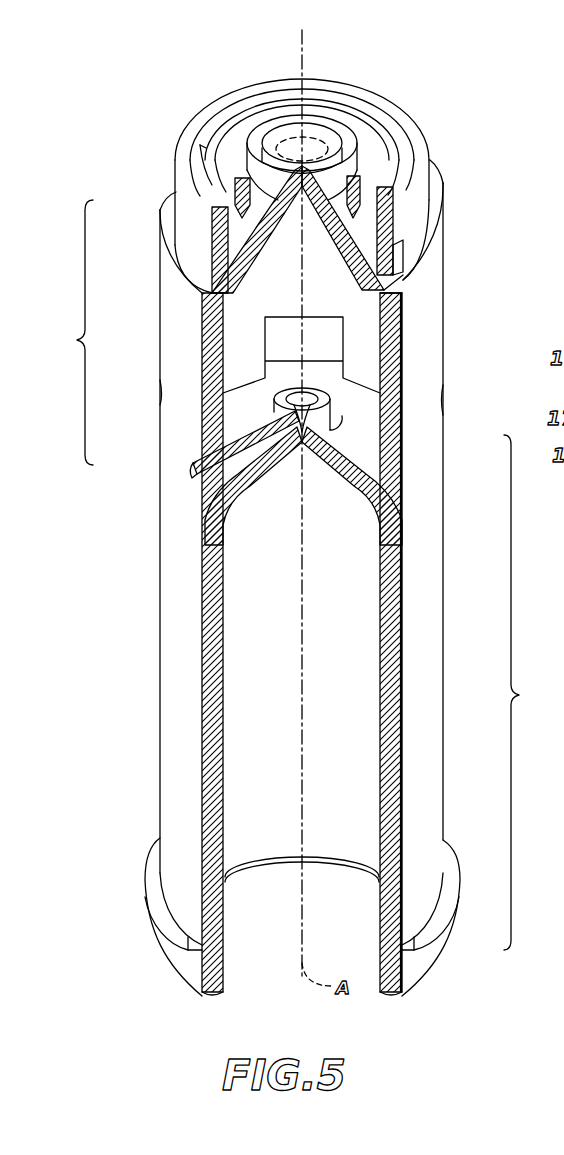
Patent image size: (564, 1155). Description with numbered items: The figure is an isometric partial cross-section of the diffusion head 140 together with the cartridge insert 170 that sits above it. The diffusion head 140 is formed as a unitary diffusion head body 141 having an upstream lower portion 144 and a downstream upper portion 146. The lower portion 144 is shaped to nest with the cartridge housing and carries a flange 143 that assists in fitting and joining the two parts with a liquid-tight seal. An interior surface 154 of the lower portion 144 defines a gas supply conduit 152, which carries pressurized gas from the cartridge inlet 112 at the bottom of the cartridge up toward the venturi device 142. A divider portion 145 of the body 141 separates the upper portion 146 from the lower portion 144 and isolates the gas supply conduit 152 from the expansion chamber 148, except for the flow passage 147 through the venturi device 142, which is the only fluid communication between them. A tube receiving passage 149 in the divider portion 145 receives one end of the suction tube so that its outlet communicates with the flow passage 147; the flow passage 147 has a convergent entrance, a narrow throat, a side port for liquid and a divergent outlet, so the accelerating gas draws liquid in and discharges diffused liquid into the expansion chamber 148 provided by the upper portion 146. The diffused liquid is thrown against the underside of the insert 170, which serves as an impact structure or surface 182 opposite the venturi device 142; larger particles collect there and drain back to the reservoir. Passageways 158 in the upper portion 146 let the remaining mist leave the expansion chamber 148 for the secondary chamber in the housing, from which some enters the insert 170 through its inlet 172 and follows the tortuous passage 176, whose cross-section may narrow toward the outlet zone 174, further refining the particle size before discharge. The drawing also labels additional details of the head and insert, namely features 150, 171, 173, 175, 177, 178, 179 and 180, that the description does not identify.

The cartridge inlet 112 is at (262, 987).
The diffusion head 140 is at (483, 300).
The diffusion head body 141 is at (213, 757).
The venturi device 142 is at (343, 417).
The flange 143 is at (163, 907).
The lower portion 144 is at (534, 692).
The divider portion 145 is at (353, 457).
The upper portion 146 is at (63, 332).
The flow passage 147 is at (312, 468).
The expansion chamber 148 is at (358, 372).
The tube receiving passage 149 is at (210, 473).
The collar top 150 is at (392, 297).
The gas supply conduit 152 is at (350, 737).
The interior surface 154 is at (378, 764).
The passageways 158 is at (286, 341).
The cartridge insert 170 is at (494, 88).
The cap skirt left 171 is at (197, 223).
The inlet 172 is at (403, 257).
The cap skirt right 173 is at (407, 220).
The outlet zone 174 is at (323, 137).
The boss 175 is at (353, 127).
The tortuous passage 176 is at (270, 100).
The inner ring 177 is at (183, 150).
The outer ring 178 is at (387, 163).
The leg 179 is at (253, 213).
The left conical wall 180 is at (277, 253).
The impact structure or surface 182 is at (375, 240).